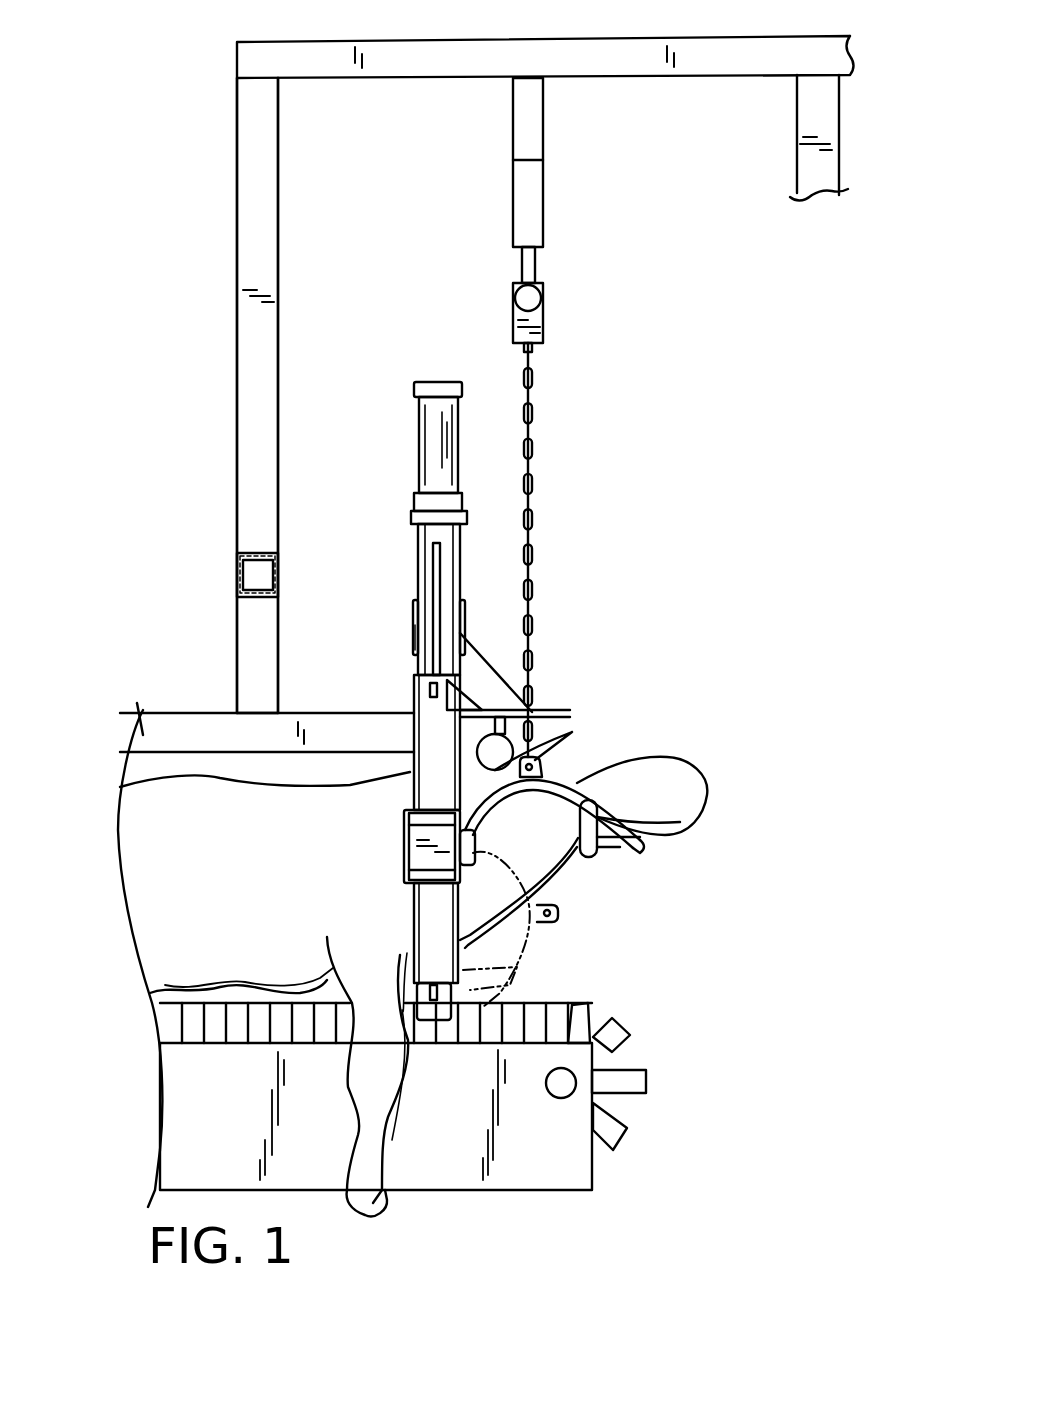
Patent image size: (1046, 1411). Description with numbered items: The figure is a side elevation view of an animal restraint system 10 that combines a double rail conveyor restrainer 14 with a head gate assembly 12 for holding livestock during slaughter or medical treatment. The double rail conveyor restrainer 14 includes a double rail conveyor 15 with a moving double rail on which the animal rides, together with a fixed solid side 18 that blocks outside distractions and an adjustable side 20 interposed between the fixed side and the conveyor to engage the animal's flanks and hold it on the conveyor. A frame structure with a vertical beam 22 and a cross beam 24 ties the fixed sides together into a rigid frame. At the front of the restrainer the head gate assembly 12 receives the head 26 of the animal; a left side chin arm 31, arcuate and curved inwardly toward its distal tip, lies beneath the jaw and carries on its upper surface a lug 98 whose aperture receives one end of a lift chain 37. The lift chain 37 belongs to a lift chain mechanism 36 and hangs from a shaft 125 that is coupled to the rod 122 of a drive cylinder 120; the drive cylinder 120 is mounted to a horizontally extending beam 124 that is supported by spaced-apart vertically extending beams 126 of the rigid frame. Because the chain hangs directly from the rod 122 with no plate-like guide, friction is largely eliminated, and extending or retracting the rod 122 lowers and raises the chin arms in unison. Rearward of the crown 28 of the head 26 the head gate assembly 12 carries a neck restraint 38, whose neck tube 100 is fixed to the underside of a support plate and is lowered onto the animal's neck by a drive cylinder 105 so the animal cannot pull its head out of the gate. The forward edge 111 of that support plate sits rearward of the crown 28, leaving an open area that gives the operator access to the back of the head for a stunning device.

The animal restraint system 10 is at (822, 457).
The head gate assembly 12 is at (379, 691).
The double rail conveyor restrainer 14 is at (285, 1172).
The double rail conveyor 15 is at (585, 1003).
The fixed solid side 18 is at (137, 720).
The adjustable side 20 is at (192, 767).
The vertical beam 22 is at (248, 652).
The cross beam 24 is at (237, 575).
The head 26 is at (673, 818).
The crown 28 is at (592, 745).
The left side chin arm 31 is at (572, 792).
The lift chain mechanism 36 is at (583, 245).
The lift chain 37 is at (535, 485).
The neck restraint 38 is at (399, 373).
The lug 98 is at (572, 732).
The neck tube 100 is at (508, 717).
The drive cylinder 105 is at (419, 450).
The forward edge 111 is at (553, 727).
The drive cylinder 120 is at (513, 128).
The rod 122 is at (527, 273).
The horizontally extending beam 124 is at (720, 36).
The shaft 125 is at (530, 298).
The vertically extending beams 126 is at (840, 133).